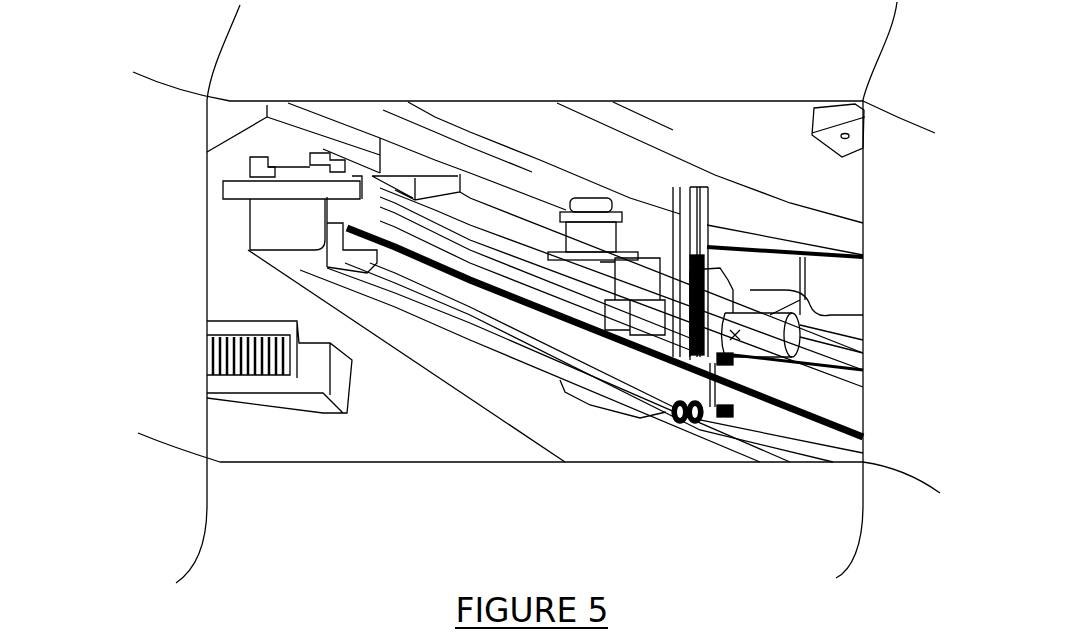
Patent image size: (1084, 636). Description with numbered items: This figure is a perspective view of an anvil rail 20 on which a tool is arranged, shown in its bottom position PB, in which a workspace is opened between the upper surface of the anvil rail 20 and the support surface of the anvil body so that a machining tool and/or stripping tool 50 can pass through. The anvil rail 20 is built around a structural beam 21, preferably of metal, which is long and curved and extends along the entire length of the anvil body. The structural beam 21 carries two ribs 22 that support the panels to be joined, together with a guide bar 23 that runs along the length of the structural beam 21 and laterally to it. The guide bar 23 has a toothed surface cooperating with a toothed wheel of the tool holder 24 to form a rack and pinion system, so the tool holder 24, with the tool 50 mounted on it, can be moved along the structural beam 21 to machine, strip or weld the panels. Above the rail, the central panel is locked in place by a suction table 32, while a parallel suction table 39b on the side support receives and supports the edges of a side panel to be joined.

The ribs 22 is at (320, 157).
The suction table 39b is at (387, 130).
The machining tool and/or stripping tool 50 is at (578, 203).
The suction table 32 is at (603, 148).
The structural beam 21 is at (265, 223).
The anvil rail 20 is at (248, 233).
The tool holder 24 is at (865, 315).
The guide bar 23 is at (548, 322).